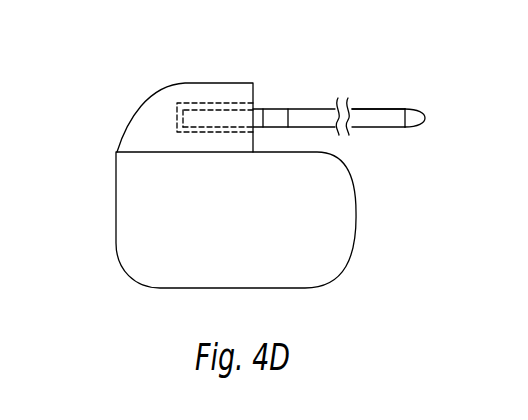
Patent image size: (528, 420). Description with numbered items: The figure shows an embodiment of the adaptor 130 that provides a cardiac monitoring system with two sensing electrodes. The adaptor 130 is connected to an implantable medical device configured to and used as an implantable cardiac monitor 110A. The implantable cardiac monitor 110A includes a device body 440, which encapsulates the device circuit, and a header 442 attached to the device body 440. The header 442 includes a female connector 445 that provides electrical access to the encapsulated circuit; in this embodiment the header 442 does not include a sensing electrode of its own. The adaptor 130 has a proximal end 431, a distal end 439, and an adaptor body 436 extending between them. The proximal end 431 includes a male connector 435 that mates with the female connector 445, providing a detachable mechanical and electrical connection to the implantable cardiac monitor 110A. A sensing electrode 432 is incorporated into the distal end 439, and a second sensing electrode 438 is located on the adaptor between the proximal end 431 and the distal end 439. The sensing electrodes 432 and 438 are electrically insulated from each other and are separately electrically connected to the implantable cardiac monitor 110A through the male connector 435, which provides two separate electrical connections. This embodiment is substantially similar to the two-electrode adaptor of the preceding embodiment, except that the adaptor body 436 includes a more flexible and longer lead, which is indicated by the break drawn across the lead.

The implantable cardiac monitor 110A is at (263, 165).
The device body 440 is at (356, 215).
The header 442 is at (126, 130).
The female connector 445 is at (208, 103).
The male connector 435 is at (222, 112).
The proximal end 431 is at (186, 106).
The adaptor 130 is at (371, 112).
The second sensing electrode 438 is at (275, 114).
The adaptor body 436 is at (395, 112).
The distal end 439 is at (416, 105).
The sensing electrode 432 is at (428, 121).